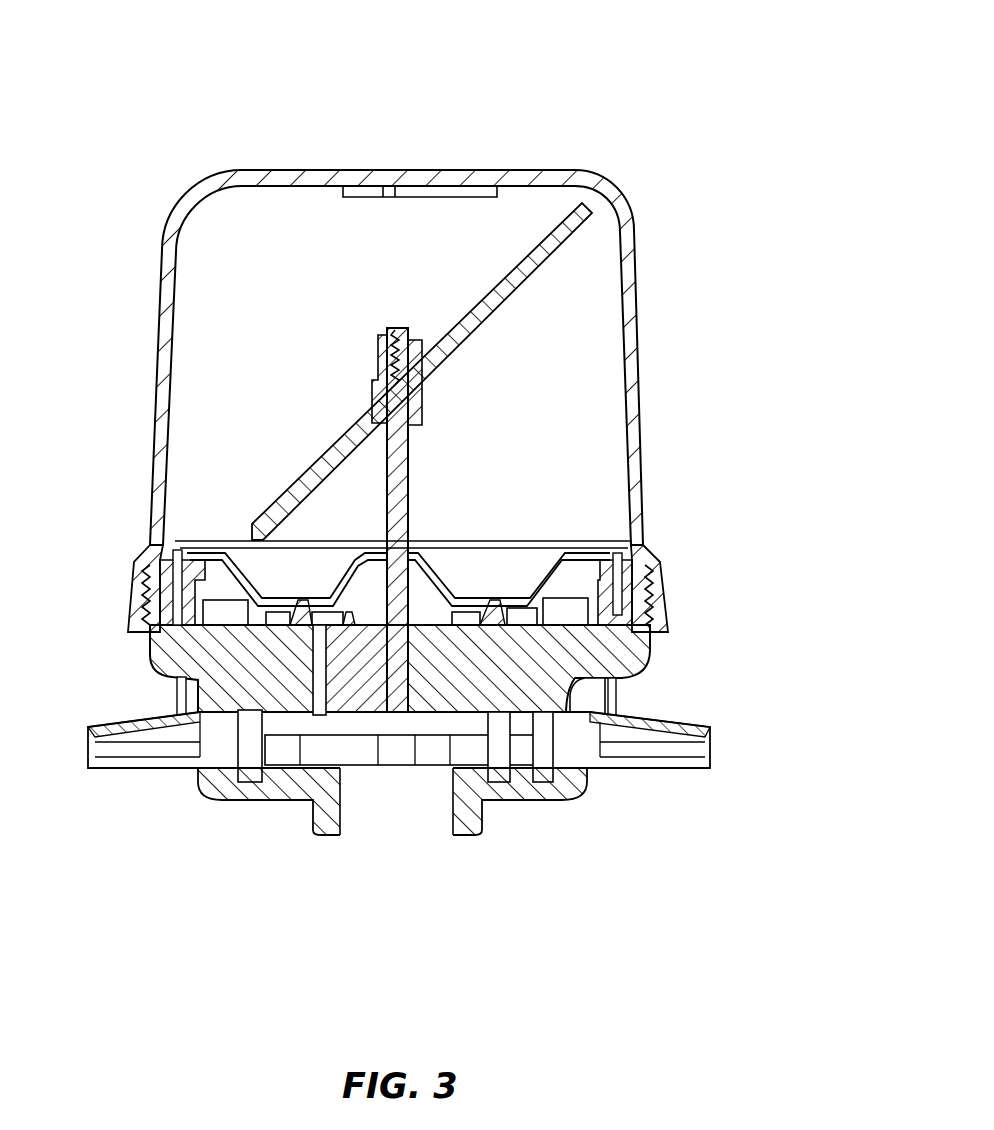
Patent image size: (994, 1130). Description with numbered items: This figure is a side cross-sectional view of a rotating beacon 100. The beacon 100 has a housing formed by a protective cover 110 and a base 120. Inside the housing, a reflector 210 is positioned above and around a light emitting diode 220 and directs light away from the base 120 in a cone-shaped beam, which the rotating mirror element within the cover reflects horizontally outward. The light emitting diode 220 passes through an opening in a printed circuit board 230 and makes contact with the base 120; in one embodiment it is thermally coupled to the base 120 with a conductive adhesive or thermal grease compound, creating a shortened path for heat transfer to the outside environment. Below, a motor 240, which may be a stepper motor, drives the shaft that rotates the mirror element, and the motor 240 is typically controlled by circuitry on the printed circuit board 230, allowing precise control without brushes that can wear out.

The rotating beacon 100 is at (762, 48).
The protective cover 110 is at (186, 195).
The base 120 is at (578, 678).
The reflector 210 is at (208, 557).
The light emitting diode 220 is at (303, 628).
The printed circuit board 230 is at (303, 607).
The motor 240 is at (312, 807).